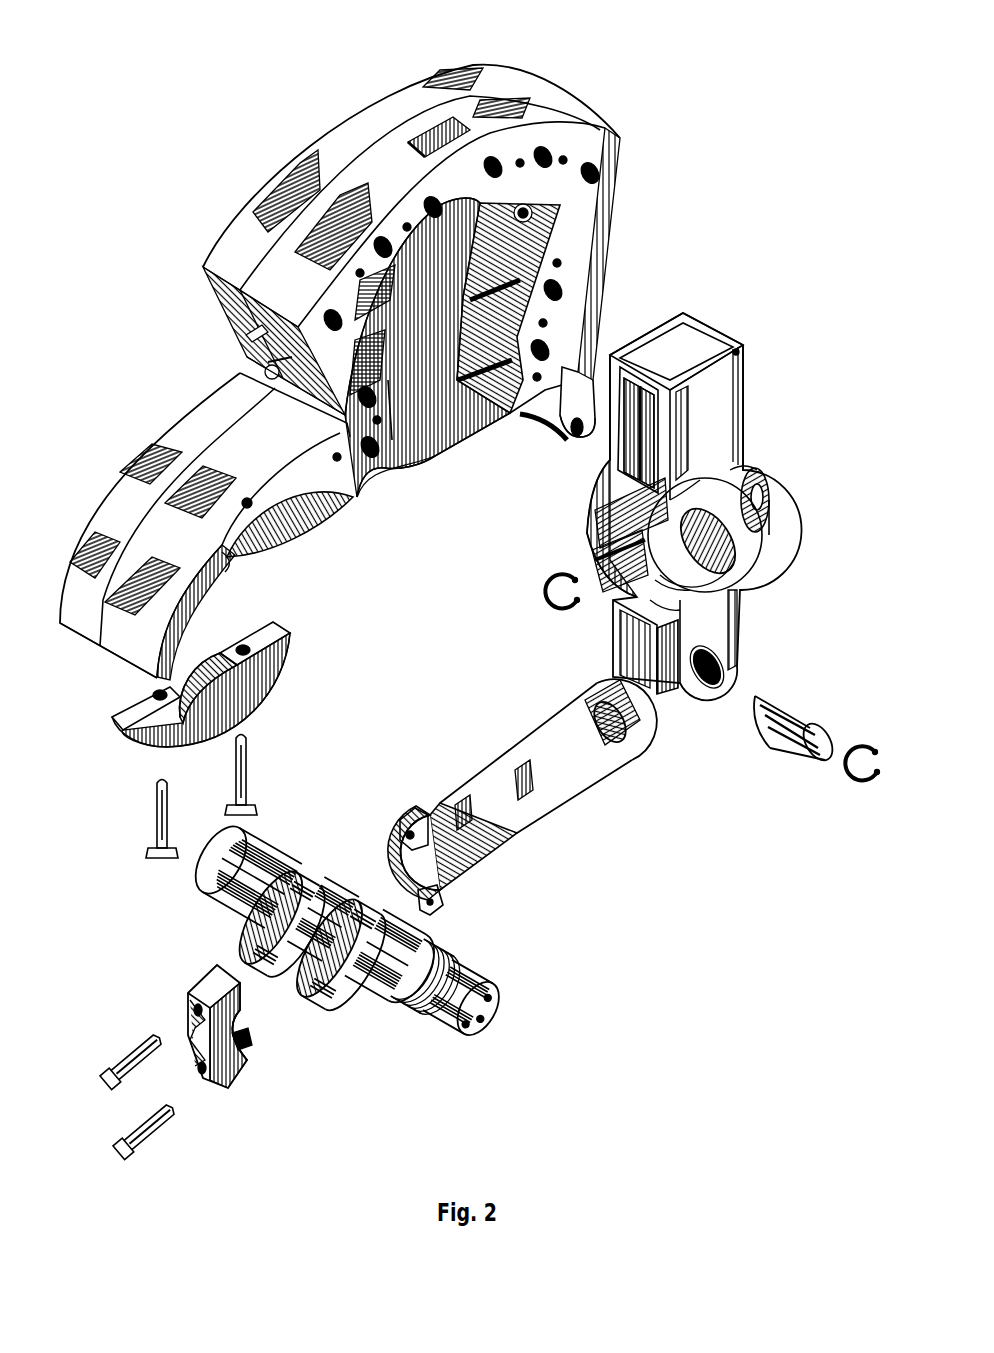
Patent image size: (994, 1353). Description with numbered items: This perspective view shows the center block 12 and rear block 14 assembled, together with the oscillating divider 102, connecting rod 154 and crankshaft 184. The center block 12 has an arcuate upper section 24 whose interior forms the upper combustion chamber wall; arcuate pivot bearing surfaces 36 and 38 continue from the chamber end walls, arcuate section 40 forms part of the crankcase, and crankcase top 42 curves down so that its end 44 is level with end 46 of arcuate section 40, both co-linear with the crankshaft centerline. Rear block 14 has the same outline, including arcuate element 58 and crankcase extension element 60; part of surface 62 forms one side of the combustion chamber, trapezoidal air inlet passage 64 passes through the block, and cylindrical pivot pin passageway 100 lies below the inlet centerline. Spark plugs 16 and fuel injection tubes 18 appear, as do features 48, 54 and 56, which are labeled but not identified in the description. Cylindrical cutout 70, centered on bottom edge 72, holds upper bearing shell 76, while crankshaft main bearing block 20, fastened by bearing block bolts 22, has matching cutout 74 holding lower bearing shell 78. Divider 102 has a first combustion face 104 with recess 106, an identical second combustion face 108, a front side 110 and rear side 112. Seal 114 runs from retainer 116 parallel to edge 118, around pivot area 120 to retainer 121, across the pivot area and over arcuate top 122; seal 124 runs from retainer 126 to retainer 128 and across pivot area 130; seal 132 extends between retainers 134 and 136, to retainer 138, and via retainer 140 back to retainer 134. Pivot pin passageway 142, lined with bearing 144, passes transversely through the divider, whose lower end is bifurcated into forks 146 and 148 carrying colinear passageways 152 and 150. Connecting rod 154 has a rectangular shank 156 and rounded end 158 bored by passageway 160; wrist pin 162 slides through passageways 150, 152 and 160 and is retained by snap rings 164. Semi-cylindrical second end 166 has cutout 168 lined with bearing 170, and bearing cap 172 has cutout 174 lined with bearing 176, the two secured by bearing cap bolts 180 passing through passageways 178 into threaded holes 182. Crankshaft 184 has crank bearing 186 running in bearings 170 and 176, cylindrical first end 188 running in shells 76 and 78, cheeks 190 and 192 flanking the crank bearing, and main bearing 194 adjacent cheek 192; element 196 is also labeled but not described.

The center block 12 is at (618, 178).
The rear block 14 is at (220, 226).
The spark plugs 16 is at (262, 369).
The fuel injection tubes 18 is at (245, 338).
The crankshaft main bearing block 20 is at (276, 660).
The bearing block bolts 22 is at (250, 762).
The arcuate upper section 24 is at (306, 282).
The arcuate pivot bearing surface 36 is at (502, 386).
The arcuate pivot bearing surface 38 is at (412, 463).
The arcuate section 40 is at (568, 405).
The crankcase top 42 is at (178, 554).
The end of crankcase top 44 is at (125, 660).
The end of arcuate section 46 is at (545, 435).
The slot 48 is at (420, 150).
The bolt hole 54 is at (565, 160).
The bore 56 is at (490, 172).
The arcuate element 58 is at (360, 108).
The crankcase extension element 60 is at (160, 432).
The surface 62 is at (452, 276).
The air inlet passage 64 is at (388, 300).
The cylindrical cutout 70 is at (230, 568).
The bottom edge 72 is at (295, 540).
The cylindrical cutout 74 is at (235, 708).
The upper bearing shell 76 is at (220, 575).
The lower bearing shell 78 is at (200, 680).
The cylindrical pivot pin passageway 100 is at (395, 410).
The oscillating divider 102 is at (722, 326).
The first combustion face 104 is at (612, 453).
The recess 106 is at (620, 480).
The second combustion face 108 is at (745, 425).
The front side 110 is at (685, 444).
The rear side 112 is at (648, 320).
The seal 114 is at (685, 410).
The retainer 116 is at (705, 360).
The edge 118 is at (655, 535).
The pivot area 120 is at (592, 518).
The retainer 121 is at (668, 590).
The arcuate top 122 is at (648, 350).
The seal 124 is at (745, 380).
The retainer 126 is at (745, 352).
The retainer 128 is at (768, 510).
The pivot area 130 is at (765, 490).
The seal 132 is at (683, 448).
The retainer 134 is at (748, 468).
The retainer 136 is at (660, 508).
The retainer 138 is at (665, 620).
The retainer 140 is at (752, 532).
The cylindrical pivot pin passageway 142 is at (732, 560).
The bearing 144 is at (725, 572).
The fork 146 is at (615, 636).
The fork 148 is at (738, 620).
The cylindrical passageway 150 is at (693, 668).
The cylindrical passageway 152 is at (655, 660).
The connecting rod 154 is at (525, 825).
The straight rectangular shank 156 is at (590, 777).
The rounded end 158 is at (640, 720).
The cylindrical passageway 160 is at (625, 743).
The wrist pin 162 is at (790, 743).
The snap rings 164 is at (552, 600).
The second end 166 is at (412, 810).
The semi-cylindrical cutout 168 is at (445, 885).
The bearing 170 is at (430, 855).
The connecting rod bearing cap 172 is at (235, 1085).
The semi-cylindrical cutout 174 is at (240, 1062).
The bearing 176 is at (240, 1043).
The cylindrical passageways 178 is at (188, 1010).
The bearing cap bolts 180 is at (140, 1070).
The threaded holes 182 is at (405, 835).
The crankshaft 184 is at (205, 897).
The crank bearing 186 is at (292, 1000).
The cylindrical first end 188 is at (245, 840).
The crankshaft cheek 190 is at (258, 921).
The crankshaft cheek 192 is at (318, 1000).
The crankshaft main bearing 194 is at (355, 908).
The threaded portion 196 is at (342, 1008).